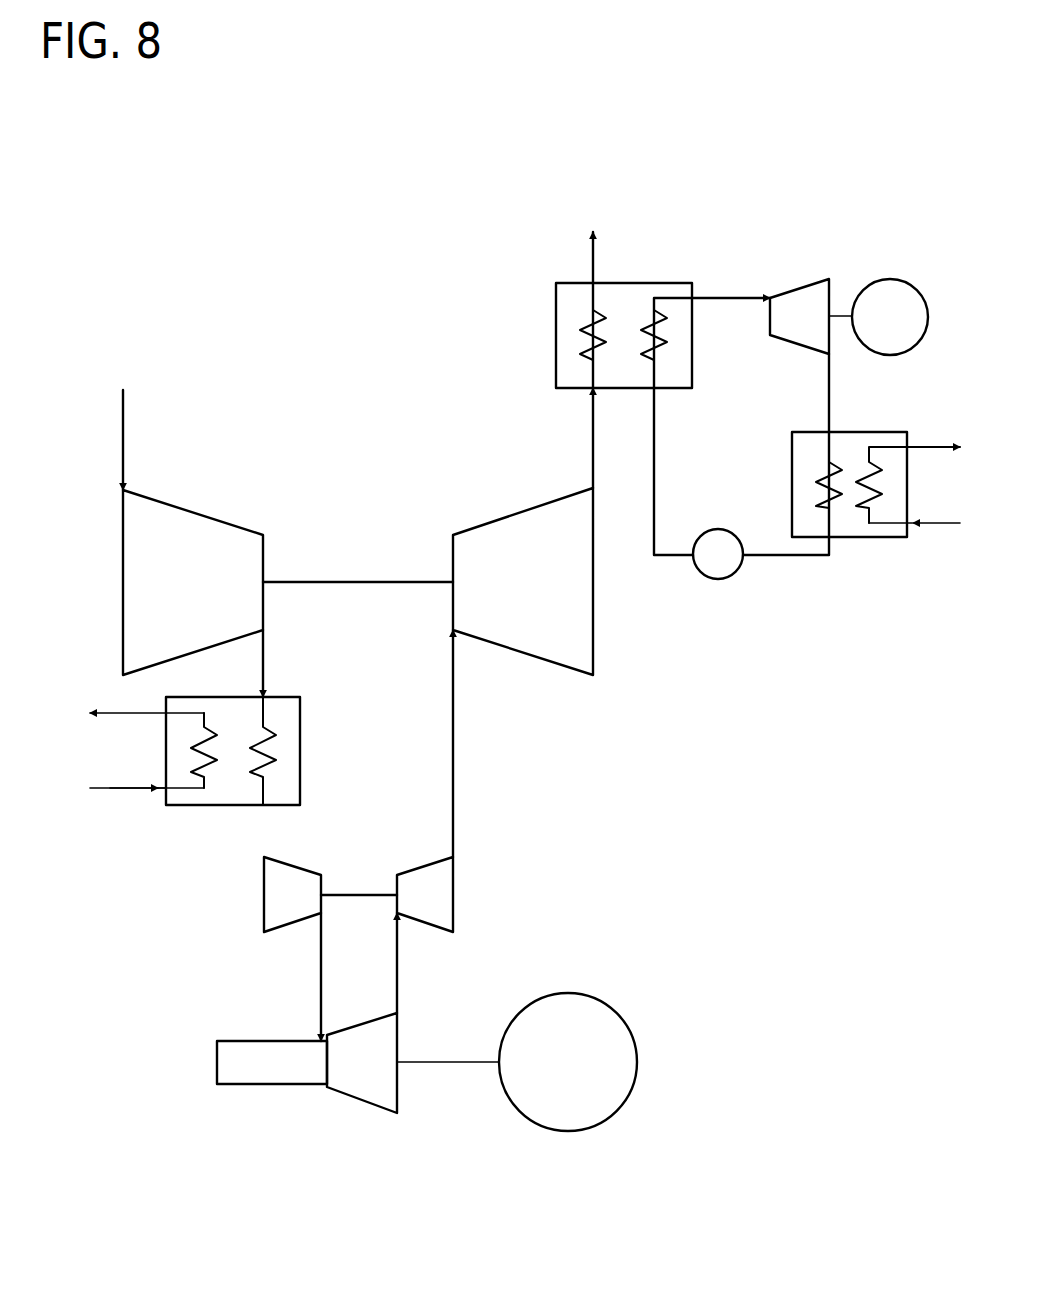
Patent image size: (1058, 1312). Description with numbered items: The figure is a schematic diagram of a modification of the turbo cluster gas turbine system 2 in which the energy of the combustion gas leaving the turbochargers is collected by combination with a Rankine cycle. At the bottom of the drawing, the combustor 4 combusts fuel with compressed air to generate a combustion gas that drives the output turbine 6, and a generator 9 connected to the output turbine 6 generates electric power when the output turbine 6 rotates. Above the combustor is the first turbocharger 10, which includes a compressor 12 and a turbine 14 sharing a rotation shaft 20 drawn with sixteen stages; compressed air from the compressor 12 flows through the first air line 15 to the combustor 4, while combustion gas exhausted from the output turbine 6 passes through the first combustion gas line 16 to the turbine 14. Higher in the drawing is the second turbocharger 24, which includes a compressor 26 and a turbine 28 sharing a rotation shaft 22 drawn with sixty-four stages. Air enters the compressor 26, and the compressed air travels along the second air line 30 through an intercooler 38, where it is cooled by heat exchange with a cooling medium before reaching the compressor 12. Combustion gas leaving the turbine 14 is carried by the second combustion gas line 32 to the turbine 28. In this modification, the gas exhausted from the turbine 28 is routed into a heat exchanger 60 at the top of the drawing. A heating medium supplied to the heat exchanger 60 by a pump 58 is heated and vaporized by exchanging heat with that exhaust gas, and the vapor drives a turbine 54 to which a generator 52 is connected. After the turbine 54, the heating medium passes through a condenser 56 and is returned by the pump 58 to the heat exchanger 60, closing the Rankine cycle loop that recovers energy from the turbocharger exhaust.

The turbo cluster gas turbine system 2 is at (665, 172).
The combustor 4 is at (240, 1086).
The output turbine 6 is at (353, 1096).
The generator 9 is at (612, 1118).
The first turbocharger 10 is at (368, 825).
The compressor 12 is at (263, 894).
The turbine 14 is at (455, 894).
The first air line 15 is at (321, 977).
The first combustion gas line 16 is at (399, 961).
The rotation shaft 20 is at (347, 893).
The rotation shaft 22 is at (352, 580).
The second turbocharger 24 is at (371, 452).
The compressor 26 is at (123, 592).
The turbine 28 is at (595, 591).
The second air line 30 is at (265, 658).
The second combustion gas line 32 is at (455, 763).
The intercooler 38 is at (300, 712).
The generator 52 is at (888, 279).
The turbine 54 is at (793, 297).
The condenser 56 is at (875, 539).
The pump 58 is at (718, 581).
The heat exchanger 60 is at (632, 282).